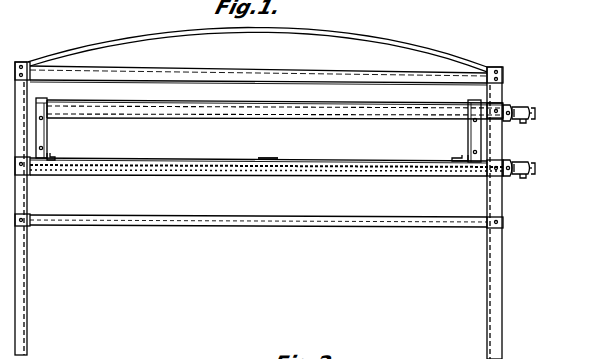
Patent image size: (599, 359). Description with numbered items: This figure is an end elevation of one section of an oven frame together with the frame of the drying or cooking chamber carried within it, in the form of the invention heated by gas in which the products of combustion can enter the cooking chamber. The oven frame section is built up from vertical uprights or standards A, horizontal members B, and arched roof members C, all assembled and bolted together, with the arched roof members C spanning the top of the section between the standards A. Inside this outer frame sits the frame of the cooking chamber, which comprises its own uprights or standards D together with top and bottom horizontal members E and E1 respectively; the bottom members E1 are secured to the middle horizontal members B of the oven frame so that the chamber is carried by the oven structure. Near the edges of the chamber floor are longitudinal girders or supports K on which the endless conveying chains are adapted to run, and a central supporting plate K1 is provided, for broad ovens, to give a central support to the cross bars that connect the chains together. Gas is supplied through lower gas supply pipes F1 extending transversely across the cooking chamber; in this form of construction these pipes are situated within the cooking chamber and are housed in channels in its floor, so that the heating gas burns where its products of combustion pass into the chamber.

The uprights or standards A is at (22, 276).
The horizontal members B is at (192, 79).
The arched roof members C is at (327, 29).
The uprights or standards D is at (42, 130).
The top horizontal members E is at (185, 113).
The bottom horizontal members E1 is at (226, 171).
The longitudinal girders or supports K is at (52, 161).
The central supporting plate K1 is at (272, 151).
The lower gas supply pipes F1 is at (522, 105).